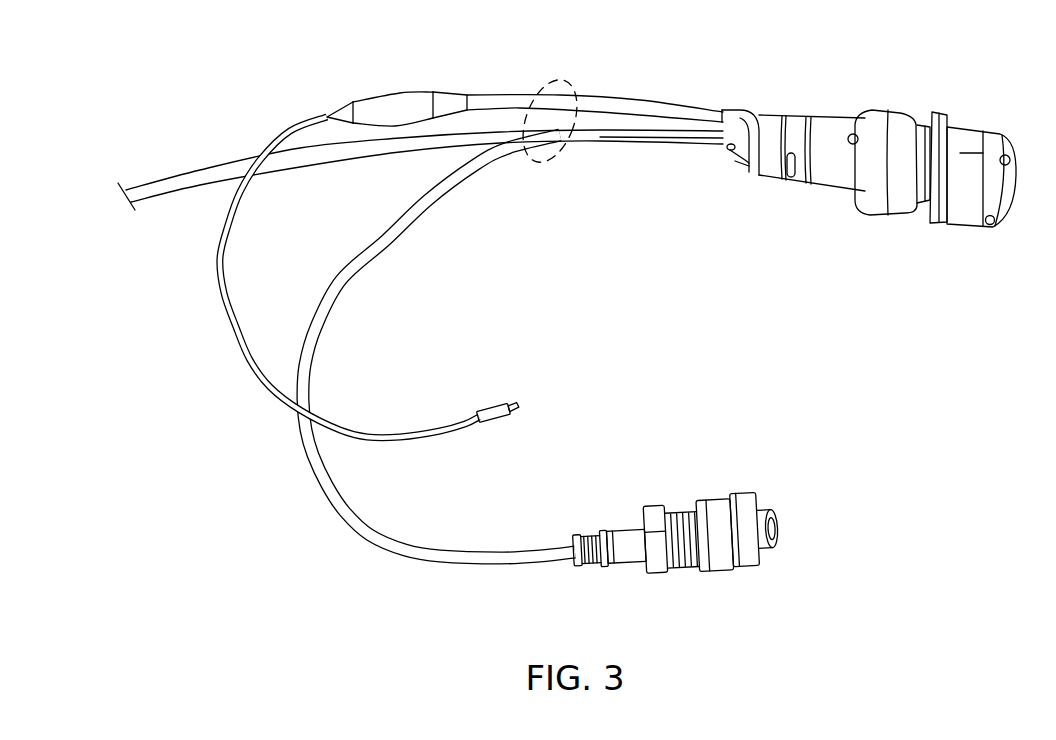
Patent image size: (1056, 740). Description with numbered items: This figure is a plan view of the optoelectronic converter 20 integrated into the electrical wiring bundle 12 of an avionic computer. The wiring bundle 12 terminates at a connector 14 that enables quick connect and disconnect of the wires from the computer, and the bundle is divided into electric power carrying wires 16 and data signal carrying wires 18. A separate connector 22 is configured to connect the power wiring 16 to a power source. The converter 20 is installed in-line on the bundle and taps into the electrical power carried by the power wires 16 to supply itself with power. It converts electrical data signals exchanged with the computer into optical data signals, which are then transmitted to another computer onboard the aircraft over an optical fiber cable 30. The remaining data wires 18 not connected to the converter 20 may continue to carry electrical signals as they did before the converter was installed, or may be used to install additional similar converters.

The electrical wiring bundle 12 is at (566, 80).
The connector 14 is at (885, 113).
The electric power carrying wires 16 is at (409, 224).
The data signal carrying wires 18 is at (478, 143).
The optoelectronic converter 20 is at (410, 94).
The connector 22 is at (655, 572).
The optical fiber cable 30 is at (215, 262).